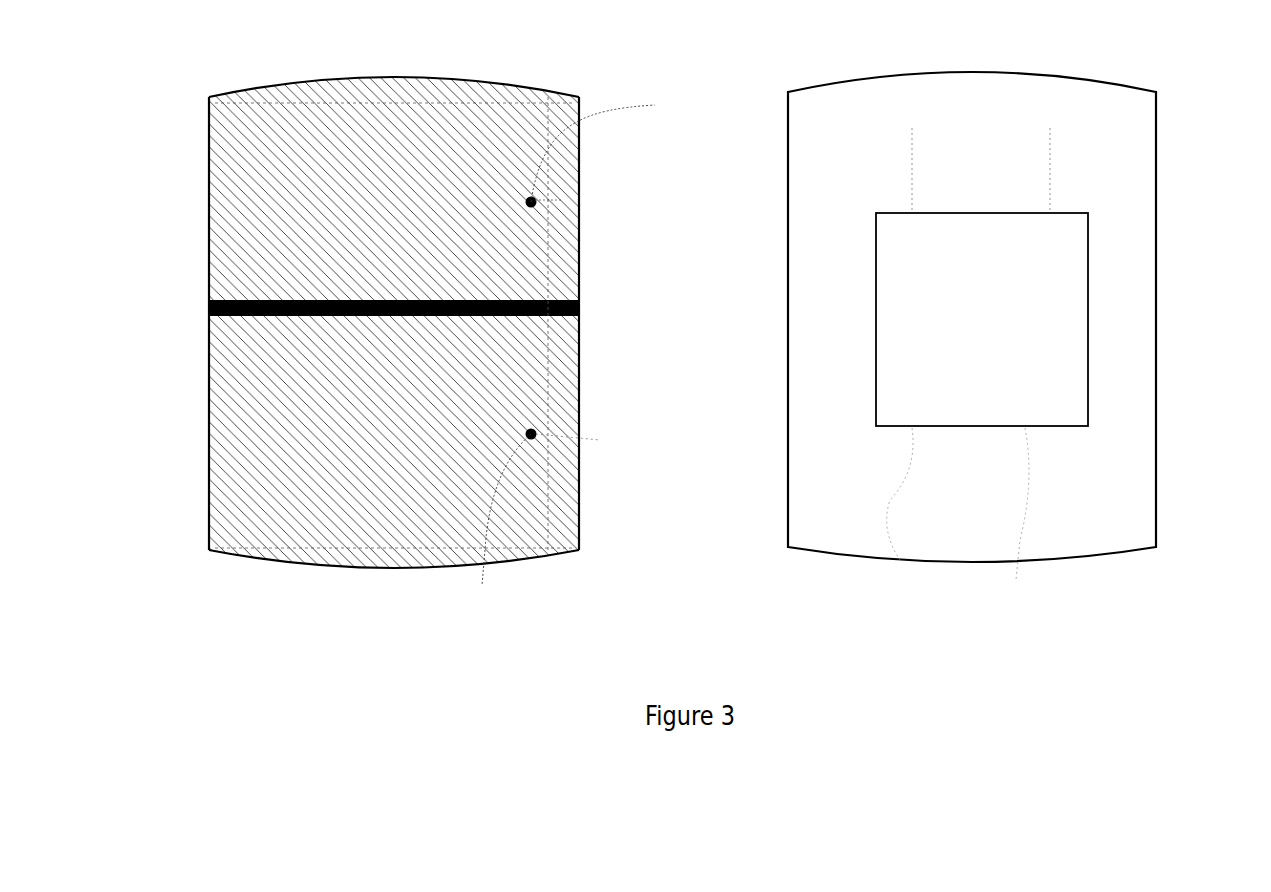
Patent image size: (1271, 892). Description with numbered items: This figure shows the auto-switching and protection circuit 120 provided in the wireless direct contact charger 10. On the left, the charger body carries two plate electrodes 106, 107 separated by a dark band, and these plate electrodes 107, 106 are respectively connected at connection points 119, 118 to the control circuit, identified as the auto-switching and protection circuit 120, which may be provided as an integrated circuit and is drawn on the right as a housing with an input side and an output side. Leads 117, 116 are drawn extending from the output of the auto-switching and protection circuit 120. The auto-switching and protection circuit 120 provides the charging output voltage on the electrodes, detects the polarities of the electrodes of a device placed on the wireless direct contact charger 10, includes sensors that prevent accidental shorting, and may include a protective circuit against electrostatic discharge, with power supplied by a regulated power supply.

The wireless direct contact charger 10 is at (345, 307).
The plate electrode 107 is at (236, 214).
The plate electrode 106 is at (236, 436).
The connection point 119 is at (616, 152).
The connection point 118 is at (538, 528).
The auto-switching and protection circuit 120 is at (1088, 212).
The output wire 117 is at (785, 578).
The output wire 116 is at (1018, 563).